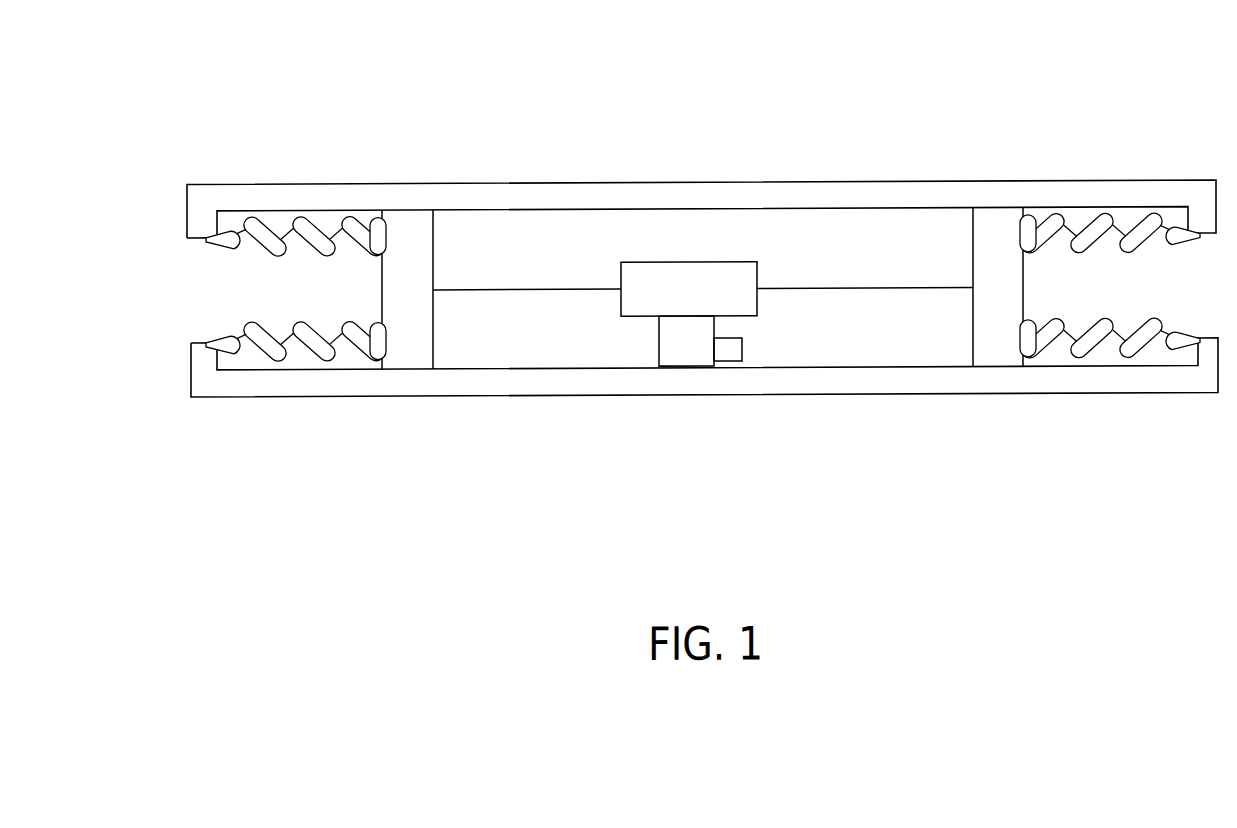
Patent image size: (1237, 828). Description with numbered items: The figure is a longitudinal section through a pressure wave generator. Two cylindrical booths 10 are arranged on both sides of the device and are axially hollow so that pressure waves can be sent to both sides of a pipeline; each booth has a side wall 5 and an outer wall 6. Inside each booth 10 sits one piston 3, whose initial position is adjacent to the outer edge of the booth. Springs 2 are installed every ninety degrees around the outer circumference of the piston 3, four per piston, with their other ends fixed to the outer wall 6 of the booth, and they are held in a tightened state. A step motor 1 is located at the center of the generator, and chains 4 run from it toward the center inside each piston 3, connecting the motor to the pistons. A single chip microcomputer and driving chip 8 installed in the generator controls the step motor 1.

The step motor 1 is at (690, 258).
The spring 2 is at (308, 222).
The piston 3 is at (406, 263).
The chain 4 is at (535, 290).
The side wall of the booth 5 is at (258, 202).
The outer wall of the booth 6 is at (197, 225).
The single chip microcomputer and driving chip 8 is at (743, 354).
The booth 10 is at (270, 282).